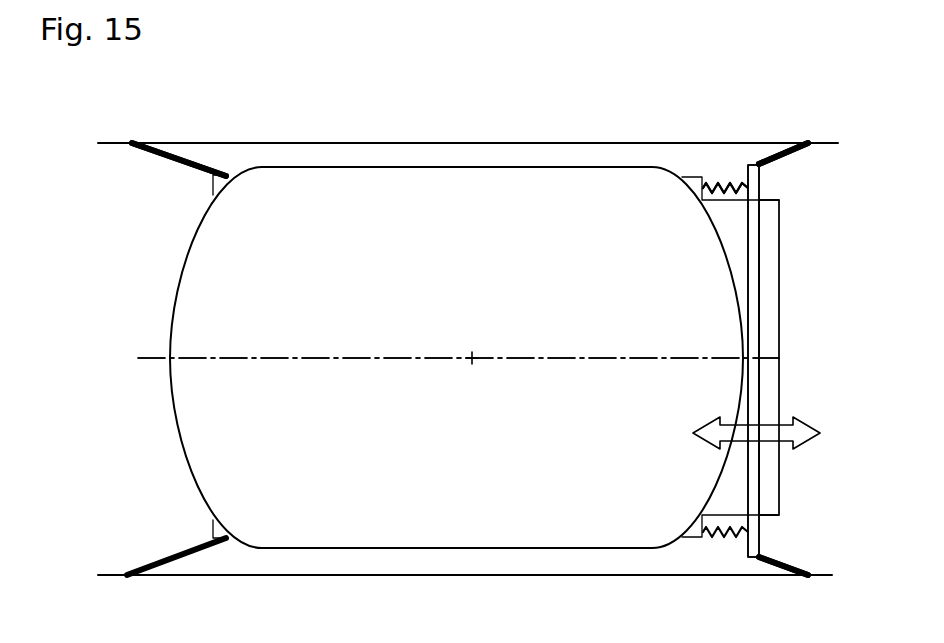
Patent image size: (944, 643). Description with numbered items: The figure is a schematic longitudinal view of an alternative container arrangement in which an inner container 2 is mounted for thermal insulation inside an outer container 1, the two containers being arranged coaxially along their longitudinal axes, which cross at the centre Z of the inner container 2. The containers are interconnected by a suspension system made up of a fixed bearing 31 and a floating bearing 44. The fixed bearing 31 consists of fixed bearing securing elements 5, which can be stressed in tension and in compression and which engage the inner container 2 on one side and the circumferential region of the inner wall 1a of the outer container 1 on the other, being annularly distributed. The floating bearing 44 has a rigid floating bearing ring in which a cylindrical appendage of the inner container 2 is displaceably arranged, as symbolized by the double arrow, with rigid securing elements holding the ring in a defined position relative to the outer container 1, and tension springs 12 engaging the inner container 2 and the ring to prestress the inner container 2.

The outer container 1 is at (350, 140).
The inner wall of the outer container 1a is at (476, 153).
The inner container 2 is at (343, 168).
The fixed bearing securing elements 5 is at (168, 159).
The tension springs 12 is at (720, 178).
The fixed bearing 31 is at (210, 125).
The floating bearing 44 is at (735, 114).
The centre of the inner container Z is at (484, 337).